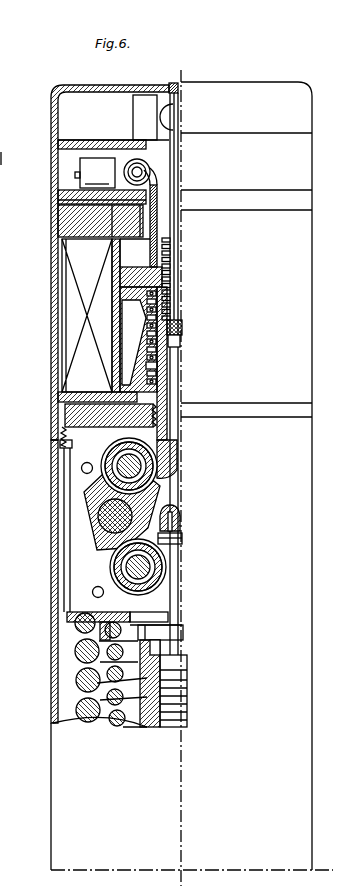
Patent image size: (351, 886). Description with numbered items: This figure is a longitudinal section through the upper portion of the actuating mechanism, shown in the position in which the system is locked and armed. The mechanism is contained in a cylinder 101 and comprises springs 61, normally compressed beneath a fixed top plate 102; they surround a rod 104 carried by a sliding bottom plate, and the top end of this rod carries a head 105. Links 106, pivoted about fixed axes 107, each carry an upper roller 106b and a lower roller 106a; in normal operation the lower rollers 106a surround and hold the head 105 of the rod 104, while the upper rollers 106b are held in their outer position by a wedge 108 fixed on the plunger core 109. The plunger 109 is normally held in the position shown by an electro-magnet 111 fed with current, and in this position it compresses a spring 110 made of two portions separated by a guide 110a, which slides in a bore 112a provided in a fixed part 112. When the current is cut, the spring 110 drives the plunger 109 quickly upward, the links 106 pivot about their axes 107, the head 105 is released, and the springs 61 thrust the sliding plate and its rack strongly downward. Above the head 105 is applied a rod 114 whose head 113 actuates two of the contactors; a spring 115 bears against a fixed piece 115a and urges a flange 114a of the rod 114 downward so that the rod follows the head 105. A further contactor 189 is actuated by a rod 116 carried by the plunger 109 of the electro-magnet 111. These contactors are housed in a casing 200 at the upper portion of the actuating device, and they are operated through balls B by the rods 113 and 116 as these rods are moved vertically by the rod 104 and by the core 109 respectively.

The casing 200 is at (104, 85).
The head 113 is at (176, 121).
The ball B is at (150, 167).
The contactor 189 is at (95, 173).
The rod 116 is at (160, 192).
The fixed piece 115a is at (110, 218).
The spring 115 is at (176, 252).
The plunger core 109 is at (160, 282).
The electro-magnet 111 is at (76, 328).
The flange 114a is at (182, 335).
The spring 110 is at (153, 360).
The guide 110a is at (147, 322).
The bore 112a is at (160, 366).
The fixed part 112 is at (140, 376).
The rod 114 is at (180, 441).
The wedge 108 is at (173, 464).
The upper roller 106b is at (145, 472).
The link 106 is at (143, 500).
The head 105 is at (178, 533).
The axis 107 is at (165, 543).
The lower roller 106a is at (150, 572).
The cylinder 101 is at (62, 544).
The fixed top plate 102 is at (67, 616).
The spring 61 is at (112, 720).
The rod 104 is at (153, 718).